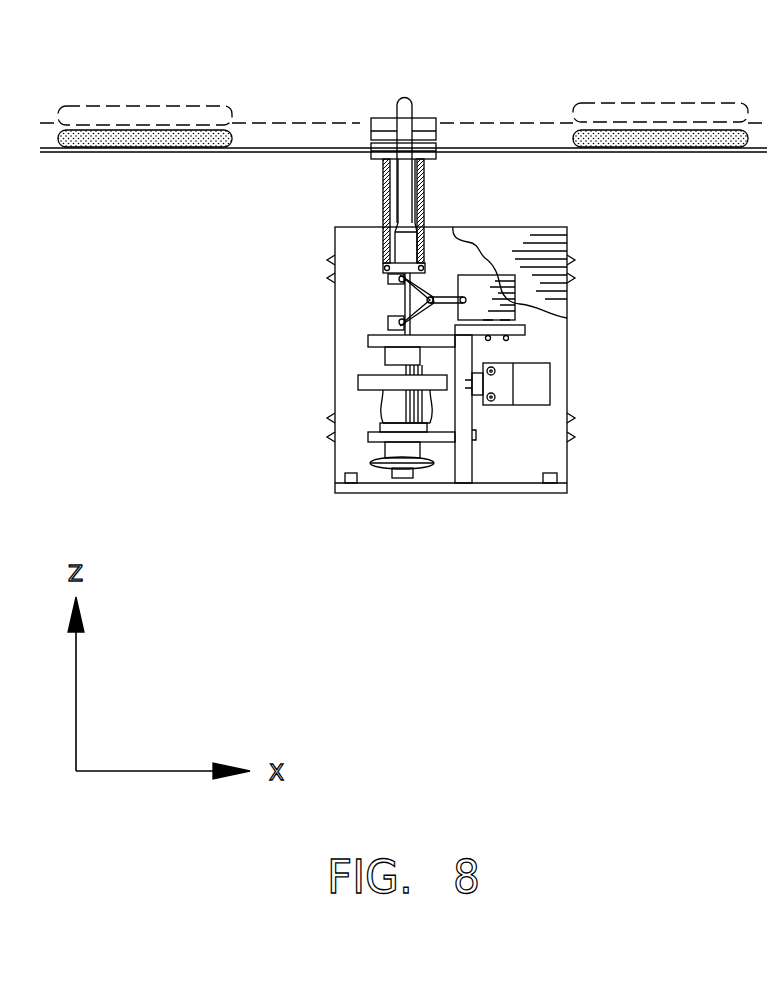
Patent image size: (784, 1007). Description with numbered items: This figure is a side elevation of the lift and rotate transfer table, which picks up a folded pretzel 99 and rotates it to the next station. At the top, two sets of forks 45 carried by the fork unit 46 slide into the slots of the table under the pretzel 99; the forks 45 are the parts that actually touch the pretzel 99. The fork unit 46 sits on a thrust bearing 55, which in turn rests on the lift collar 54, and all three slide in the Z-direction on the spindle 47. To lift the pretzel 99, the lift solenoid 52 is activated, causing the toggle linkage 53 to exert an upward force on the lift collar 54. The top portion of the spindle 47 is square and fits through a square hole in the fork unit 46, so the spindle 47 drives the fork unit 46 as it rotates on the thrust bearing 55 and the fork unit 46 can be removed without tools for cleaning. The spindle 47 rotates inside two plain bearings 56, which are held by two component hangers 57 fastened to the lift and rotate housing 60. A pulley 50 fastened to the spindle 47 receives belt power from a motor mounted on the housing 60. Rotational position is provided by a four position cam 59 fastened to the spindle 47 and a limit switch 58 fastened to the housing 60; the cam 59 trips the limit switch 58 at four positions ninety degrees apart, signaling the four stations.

The folded pretzel 99 is at (214, 138).
The forks 45 is at (75, 153).
The fork unit 46 is at (383, 197).
The spindle 47 is at (405, 202).
The thrust bearing 55 is at (387, 233).
The lift collar 54 is at (397, 279).
The toggle linkage 53 is at (395, 300).
The lift solenoid 52 is at (515, 303).
The lift and rotate housing 60 is at (512, 240).
The component hangers 57 is at (380, 343).
The plain bearings 56 is at (392, 355).
The four position cam 59 is at (367, 382).
The pulley 50 is at (420, 472).
The limit switch 58 is at (532, 383).